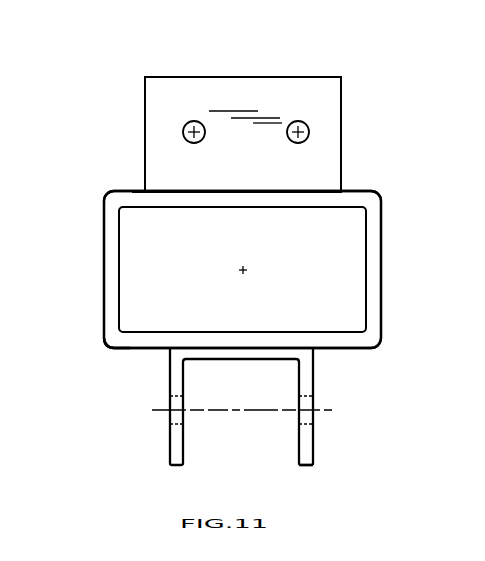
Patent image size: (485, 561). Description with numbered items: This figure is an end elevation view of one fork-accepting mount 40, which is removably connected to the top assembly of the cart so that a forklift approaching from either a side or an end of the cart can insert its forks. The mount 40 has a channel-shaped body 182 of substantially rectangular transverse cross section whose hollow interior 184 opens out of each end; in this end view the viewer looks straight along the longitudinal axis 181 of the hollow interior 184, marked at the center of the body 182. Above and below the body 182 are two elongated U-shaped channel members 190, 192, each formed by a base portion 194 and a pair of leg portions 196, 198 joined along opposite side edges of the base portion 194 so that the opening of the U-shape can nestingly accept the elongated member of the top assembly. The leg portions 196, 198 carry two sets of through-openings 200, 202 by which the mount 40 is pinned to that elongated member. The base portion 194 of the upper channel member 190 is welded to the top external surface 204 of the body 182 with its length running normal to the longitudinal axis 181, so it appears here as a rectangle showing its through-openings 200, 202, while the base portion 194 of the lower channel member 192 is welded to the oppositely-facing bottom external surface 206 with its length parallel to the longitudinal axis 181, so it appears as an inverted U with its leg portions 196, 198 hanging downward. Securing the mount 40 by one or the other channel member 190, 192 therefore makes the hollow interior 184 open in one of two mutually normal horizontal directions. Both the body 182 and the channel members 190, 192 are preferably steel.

The fork-accepting mount 40 is at (381, 259).
The longitudinal axis 181 is at (240, 267).
The channel-shaped body 182 is at (381, 205).
The hollow interior 184 is at (119, 266).
The U-shaped channel member 190 is at (145, 123).
The U-shaped channel member 192 is at (313, 460).
The base portion 194 is at (216, 359).
The leg portion 196 is at (170, 370).
The leg portion 198 is at (341, 104).
The through-openings 200 is at (194, 121).
The through-openings 202 is at (298, 121).
The external surface 204 is at (132, 193).
The external surface 206 is at (128, 348).